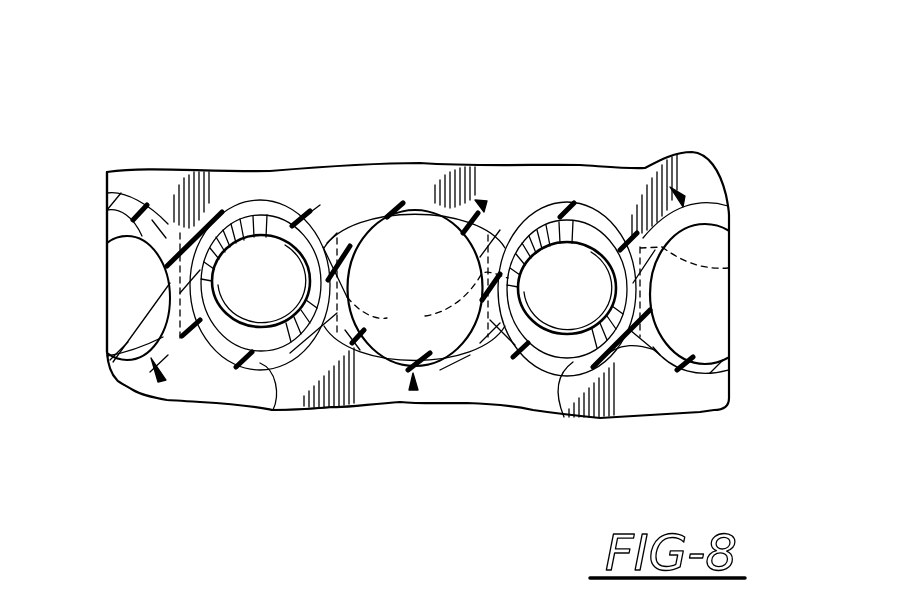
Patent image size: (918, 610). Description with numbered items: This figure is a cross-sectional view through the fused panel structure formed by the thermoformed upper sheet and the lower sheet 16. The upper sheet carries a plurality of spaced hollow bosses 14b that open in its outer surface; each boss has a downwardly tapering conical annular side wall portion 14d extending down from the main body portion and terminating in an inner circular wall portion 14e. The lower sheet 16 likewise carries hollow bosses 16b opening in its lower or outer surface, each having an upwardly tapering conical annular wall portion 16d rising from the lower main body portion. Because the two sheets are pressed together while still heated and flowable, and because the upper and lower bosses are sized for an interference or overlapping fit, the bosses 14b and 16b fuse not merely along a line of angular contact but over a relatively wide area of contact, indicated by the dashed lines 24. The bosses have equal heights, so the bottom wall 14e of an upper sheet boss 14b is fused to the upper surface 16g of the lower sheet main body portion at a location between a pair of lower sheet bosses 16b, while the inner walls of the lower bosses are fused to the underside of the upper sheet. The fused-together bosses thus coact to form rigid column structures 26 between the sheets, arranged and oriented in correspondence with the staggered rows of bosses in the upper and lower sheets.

The lower sheet 16 is at (178, 158).
The hollow bosses 14b is at (300, 185).
The conical annular side wall portions 14d is at (273, 410).
The inner circular wall portions 14e is at (270, 296).
The hollow bosses 16b is at (674, 188).
The conical annular wall portions 16d is at (104, 242).
The upper surface 16g is at (353, 395).
The dashed lines 24 is at (741, 265).
The rigid column structures 26 is at (480, 202).